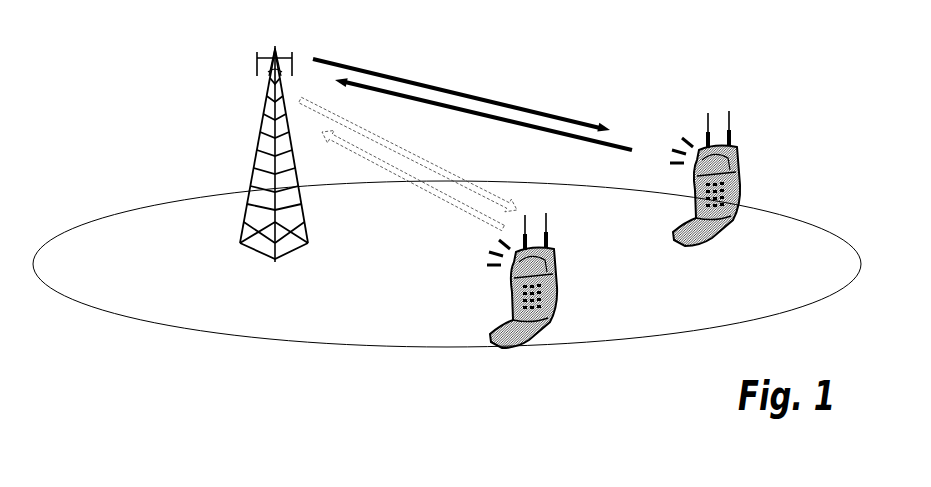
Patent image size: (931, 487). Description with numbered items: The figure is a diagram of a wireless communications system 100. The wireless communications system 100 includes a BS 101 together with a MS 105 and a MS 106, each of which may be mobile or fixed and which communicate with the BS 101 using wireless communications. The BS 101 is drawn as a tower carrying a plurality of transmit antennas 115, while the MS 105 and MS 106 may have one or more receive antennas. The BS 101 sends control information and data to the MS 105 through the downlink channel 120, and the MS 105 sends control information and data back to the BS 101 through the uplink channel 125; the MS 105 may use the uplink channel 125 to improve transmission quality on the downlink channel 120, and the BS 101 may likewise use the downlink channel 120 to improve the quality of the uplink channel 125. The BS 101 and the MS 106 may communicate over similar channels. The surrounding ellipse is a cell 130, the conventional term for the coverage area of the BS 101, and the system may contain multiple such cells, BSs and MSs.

The wireless communications system 100 is at (124, 38).
The base station 101 is at (250, 158).
The transmit antennas 115 is at (257, 52).
The downlink channel 120 is at (463, 83).
The uplink channel 125 is at (480, 123).
The mobile station 105 is at (748, 165).
The mobile station 106 is at (568, 270).
The cell 130 is at (380, 339).